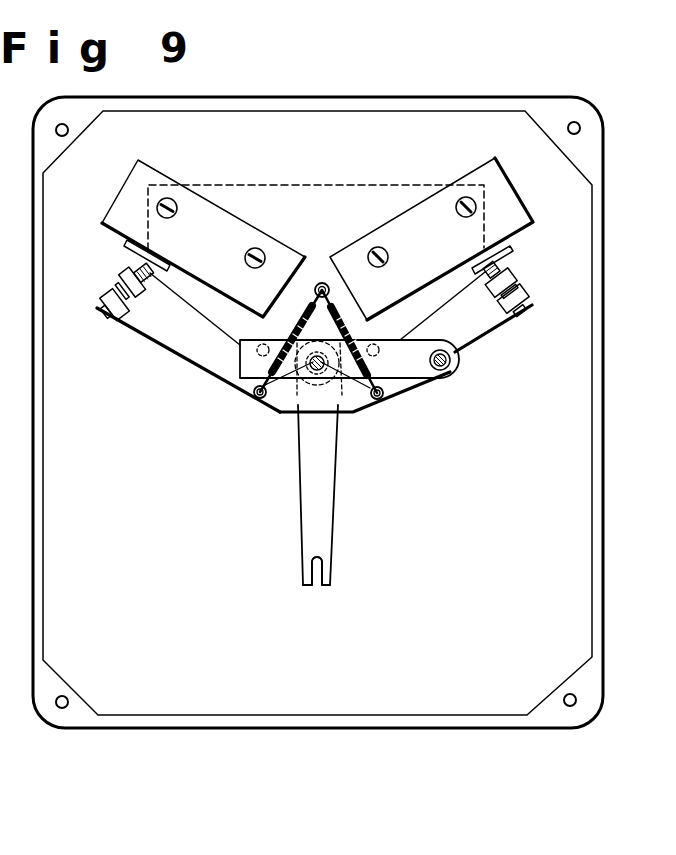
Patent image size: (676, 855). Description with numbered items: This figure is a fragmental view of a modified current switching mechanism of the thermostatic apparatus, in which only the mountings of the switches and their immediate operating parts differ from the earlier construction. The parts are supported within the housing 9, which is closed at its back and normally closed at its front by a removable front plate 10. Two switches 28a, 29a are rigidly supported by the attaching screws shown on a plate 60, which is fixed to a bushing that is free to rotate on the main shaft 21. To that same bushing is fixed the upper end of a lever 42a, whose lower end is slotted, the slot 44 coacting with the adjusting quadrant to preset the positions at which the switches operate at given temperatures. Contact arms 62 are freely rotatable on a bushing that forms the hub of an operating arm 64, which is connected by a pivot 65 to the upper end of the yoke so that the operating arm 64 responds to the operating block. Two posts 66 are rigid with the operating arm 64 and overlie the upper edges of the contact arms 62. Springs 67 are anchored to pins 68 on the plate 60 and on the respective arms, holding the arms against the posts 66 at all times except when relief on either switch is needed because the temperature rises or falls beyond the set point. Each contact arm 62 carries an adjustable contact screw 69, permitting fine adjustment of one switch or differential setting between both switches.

The housing 9 is at (603, 165).
The front plate 10 is at (326, 60).
The main shaft 21 is at (310, 377).
The switch 28a is at (203, 238).
The switch 29a is at (431, 239).
The lever 42a is at (300, 481).
The slot 44 is at (303, 557).
The plate 60 is at (236, 185).
The contact arms 62 is at (190, 355).
The operating arm 64 is at (432, 382).
The pivot 65 is at (452, 375).
The posts 66 is at (263, 342).
The springs 67 is at (303, 307).
The pins 68 is at (321, 282).
The adjustable contact screw 69 is at (105, 290).